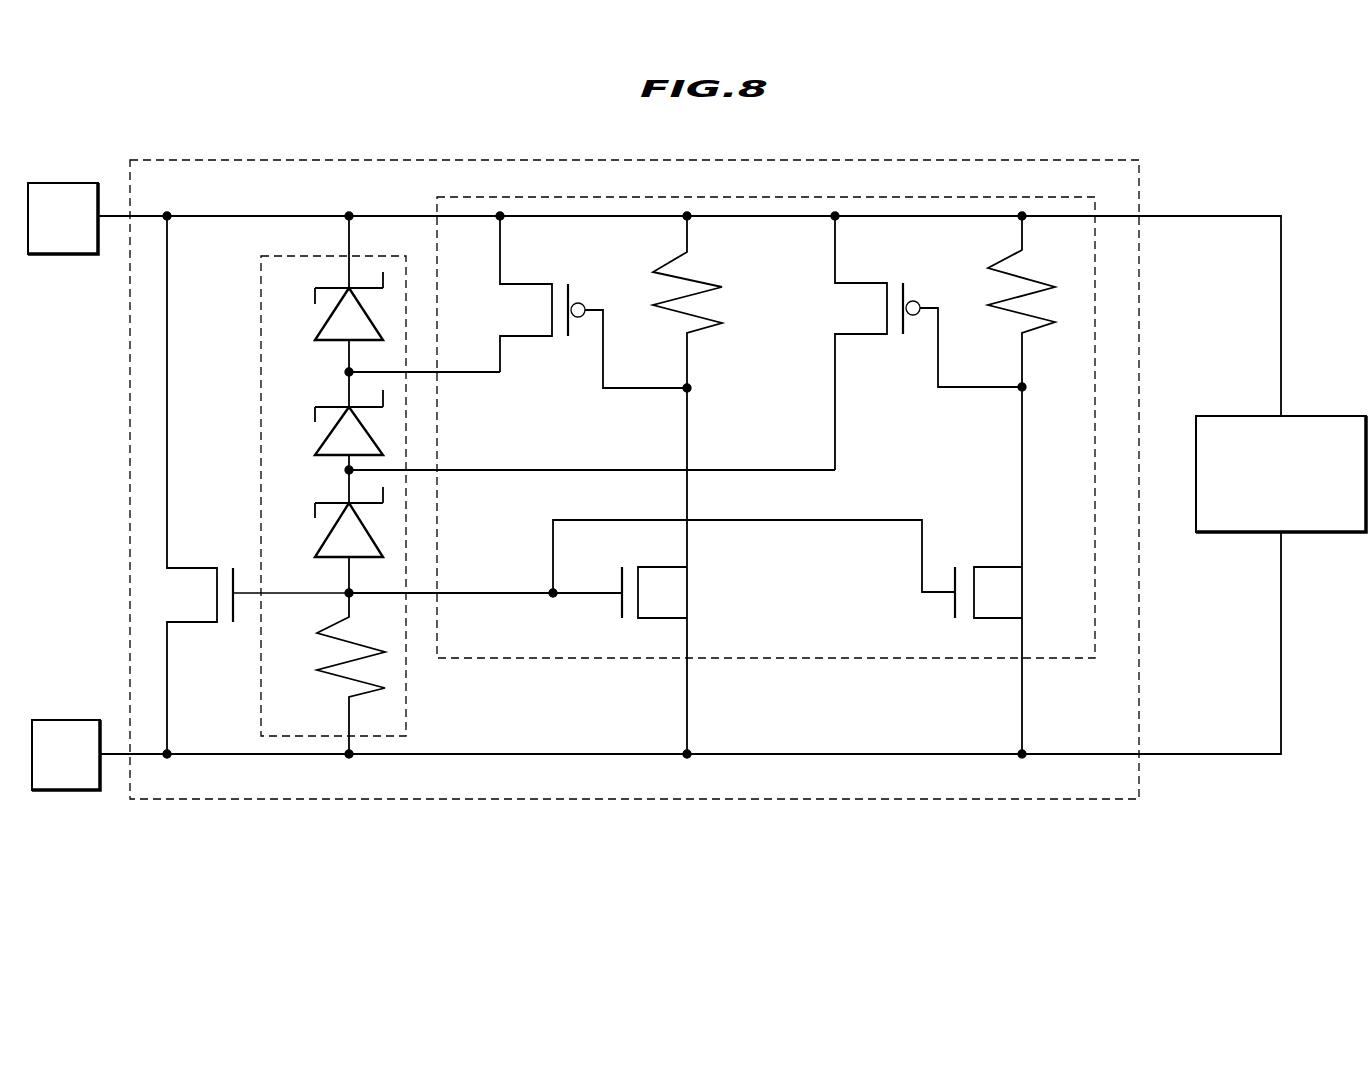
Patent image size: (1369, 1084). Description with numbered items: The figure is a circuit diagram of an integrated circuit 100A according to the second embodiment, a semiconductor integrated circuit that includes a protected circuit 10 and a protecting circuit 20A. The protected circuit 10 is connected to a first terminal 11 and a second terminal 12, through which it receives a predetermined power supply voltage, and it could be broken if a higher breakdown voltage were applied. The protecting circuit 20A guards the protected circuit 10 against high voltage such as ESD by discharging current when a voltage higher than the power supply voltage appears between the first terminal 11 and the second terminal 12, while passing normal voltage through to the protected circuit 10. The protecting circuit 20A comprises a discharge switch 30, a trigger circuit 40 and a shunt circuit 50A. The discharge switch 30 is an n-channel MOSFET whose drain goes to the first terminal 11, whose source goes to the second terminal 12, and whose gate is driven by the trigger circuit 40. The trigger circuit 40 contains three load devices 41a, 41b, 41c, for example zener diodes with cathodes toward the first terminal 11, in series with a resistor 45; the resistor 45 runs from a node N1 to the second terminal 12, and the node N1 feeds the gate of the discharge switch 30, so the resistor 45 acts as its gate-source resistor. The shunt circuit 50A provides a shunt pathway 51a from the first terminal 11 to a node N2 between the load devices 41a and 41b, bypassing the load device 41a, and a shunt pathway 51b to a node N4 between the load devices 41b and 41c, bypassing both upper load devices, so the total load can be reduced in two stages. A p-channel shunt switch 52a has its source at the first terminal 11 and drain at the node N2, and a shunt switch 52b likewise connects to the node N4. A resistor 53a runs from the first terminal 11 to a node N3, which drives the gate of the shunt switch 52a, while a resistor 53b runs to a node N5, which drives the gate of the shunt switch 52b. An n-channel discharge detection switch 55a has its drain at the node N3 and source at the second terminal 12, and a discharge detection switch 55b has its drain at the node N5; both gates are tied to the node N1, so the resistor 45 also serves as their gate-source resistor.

The integrated circuit 100A is at (1142, 117).
The protecting circuit 20A is at (1139, 340).
The protected circuit 10 is at (1321, 416).
The first terminal 11 is at (68, 257).
The second terminal 12 is at (65, 720).
The discharge switch 30 is at (188, 568).
The trigger circuit 40 is at (407, 687).
The load device 41a is at (325, 324).
The load device 41b is at (325, 441).
The load device 41c is at (327, 539).
The resistor 45 is at (317, 670).
The shunt circuit 50A is at (843, 660).
The shunt pathway 51a is at (477, 372).
The shunt pathway 51b is at (480, 470).
The shunt switch 52a is at (532, 282).
The shunt switch 52b is at (855, 282).
The resistor 53a is at (657, 305).
The resistor 53b is at (992, 305).
The discharge detection switch 55a is at (660, 567).
The discharge detection switch 55b is at (992, 566).
The node N1 is at (349, 593).
The node N2 is at (337, 380).
The node N3 is at (687, 388).
The node N4 is at (348, 472).
The node N5 is at (1022, 387).